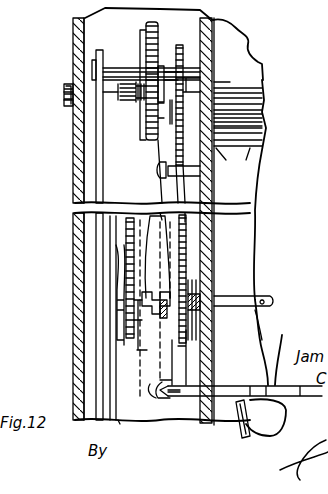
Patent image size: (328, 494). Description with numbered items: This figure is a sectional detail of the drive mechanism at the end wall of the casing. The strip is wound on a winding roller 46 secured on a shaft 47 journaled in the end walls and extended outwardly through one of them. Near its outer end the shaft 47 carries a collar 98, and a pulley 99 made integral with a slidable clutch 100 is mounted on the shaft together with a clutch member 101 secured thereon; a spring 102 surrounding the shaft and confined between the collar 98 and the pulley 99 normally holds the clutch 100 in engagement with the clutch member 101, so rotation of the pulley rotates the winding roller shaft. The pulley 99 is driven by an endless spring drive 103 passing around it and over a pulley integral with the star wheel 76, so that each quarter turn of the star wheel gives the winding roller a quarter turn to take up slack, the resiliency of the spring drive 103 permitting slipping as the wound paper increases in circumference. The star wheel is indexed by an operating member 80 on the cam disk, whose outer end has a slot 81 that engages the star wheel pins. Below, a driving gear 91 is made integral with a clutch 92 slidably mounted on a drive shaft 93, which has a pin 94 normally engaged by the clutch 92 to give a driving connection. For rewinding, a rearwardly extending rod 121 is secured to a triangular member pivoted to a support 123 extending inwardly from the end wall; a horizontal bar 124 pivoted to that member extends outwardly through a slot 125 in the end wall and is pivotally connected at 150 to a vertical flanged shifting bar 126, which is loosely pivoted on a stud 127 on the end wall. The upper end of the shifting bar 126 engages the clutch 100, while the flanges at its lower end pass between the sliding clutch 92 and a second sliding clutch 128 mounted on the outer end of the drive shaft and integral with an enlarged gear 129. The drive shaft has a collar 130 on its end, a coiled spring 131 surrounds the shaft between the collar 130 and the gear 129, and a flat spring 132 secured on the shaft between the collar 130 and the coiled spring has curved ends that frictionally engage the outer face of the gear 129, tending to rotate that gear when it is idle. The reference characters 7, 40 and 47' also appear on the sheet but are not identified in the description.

The frame 7 is at (36, 107).
The cylinder 40 is at (246, 132).
The winding roller 46 is at (250, 78).
The shaft 47 is at (258, 64).
The bolt 47' is at (47, 83).
The star wheel 76 is at (36, 115).
The operating member 80 is at (42, 219).
The slot 81 is at (42, 219).
The driving gear 91 is at (190, 274).
The clutch 92 is at (155, 308).
The drive shaft 93 is at (266, 298).
The pin 94 is at (174, 357).
The collar 98 is at (124, 100).
The pulley 99 is at (146, 128).
The slidable clutch 100 is at (166, 66).
The clutch member 101 is at (192, 84).
The spring 102 is at (140, 80).
The endless spring drive 103 is at (146, 40).
The rod 121 is at (250, 440).
The support 123 is at (278, 372).
The horizontal bar 124 is at (272, 386).
The slot 125 is at (206, 400).
The shifting bar 126 is at (172, 216).
The stud 127 is at (158, 170).
The second sliding clutch 128 is at (104, 362).
The enlarged gear 129 is at (96, 232).
The collar 130 is at (110, 304).
The coiled spring 131 is at (110, 336).
The flat spring 132 is at (110, 252).
The pivotal connection 150 is at (118, 430).